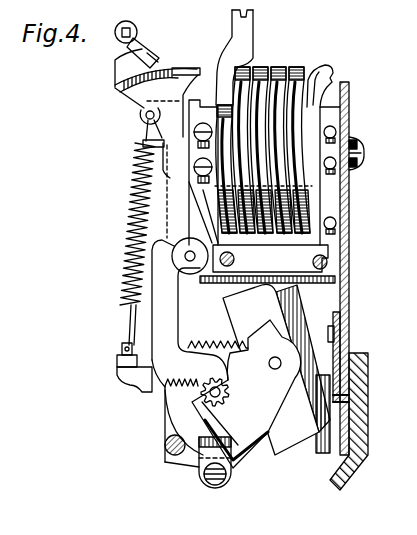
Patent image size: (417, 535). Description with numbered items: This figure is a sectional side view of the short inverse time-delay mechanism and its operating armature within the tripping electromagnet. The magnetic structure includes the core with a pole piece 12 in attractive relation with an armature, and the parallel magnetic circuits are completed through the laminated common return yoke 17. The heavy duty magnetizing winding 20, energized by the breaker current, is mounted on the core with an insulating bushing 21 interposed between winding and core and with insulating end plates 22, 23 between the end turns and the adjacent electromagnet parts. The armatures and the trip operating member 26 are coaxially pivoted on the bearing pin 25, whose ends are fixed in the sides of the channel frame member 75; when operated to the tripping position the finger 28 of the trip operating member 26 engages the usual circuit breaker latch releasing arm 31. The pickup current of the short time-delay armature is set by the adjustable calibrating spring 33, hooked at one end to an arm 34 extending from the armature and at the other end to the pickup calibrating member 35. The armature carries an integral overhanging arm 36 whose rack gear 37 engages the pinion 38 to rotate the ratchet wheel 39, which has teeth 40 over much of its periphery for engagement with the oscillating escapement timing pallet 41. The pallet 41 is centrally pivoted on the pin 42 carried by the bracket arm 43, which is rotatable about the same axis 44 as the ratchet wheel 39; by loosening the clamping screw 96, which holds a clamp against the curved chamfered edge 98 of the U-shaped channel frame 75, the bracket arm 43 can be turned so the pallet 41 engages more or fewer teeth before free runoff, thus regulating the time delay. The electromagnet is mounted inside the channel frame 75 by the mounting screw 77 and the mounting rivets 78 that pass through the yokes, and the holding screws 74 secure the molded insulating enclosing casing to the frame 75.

The pole piece 12 is at (191, 152).
The common return yoke 17 is at (333, 196).
The magnetizing winding 20 is at (293, 67).
The insulating bushing 21 is at (224, 103).
The insulating end plate 22 is at (216, 106).
The insulating end plate 23 is at (325, 102).
The bearing pin 25 is at (186, 259).
The trip operating member 26 is at (170, 68).
The finger 28 is at (120, 71).
The latch releasing arm 31 is at (143, 43).
The calibrating spring 33 is at (126, 253).
The arm 34 is at (145, 113).
The pickup calibrating member 35 is at (140, 386).
The overhanging arm 36 is at (174, 309).
The rack gear 37 is at (183, 374).
The pinion 38 is at (203, 398).
The ratchet wheel 39 is at (177, 425).
The teeth 40 is at (214, 342).
The escapement timing pallet 41 is at (280, 298).
The pin 42 is at (278, 362).
The bracket arm 43 is at (246, 394).
The axis 44 is at (220, 396).
The holding screw 74 is at (363, 389).
The channel frame member 75 is at (349, 274).
The mounting screw 77 is at (363, 157).
The mounting rivet 78 is at (313, 260).
The clamping screw 96 is at (228, 479).
The curved chamfered edge 98 is at (264, 457).